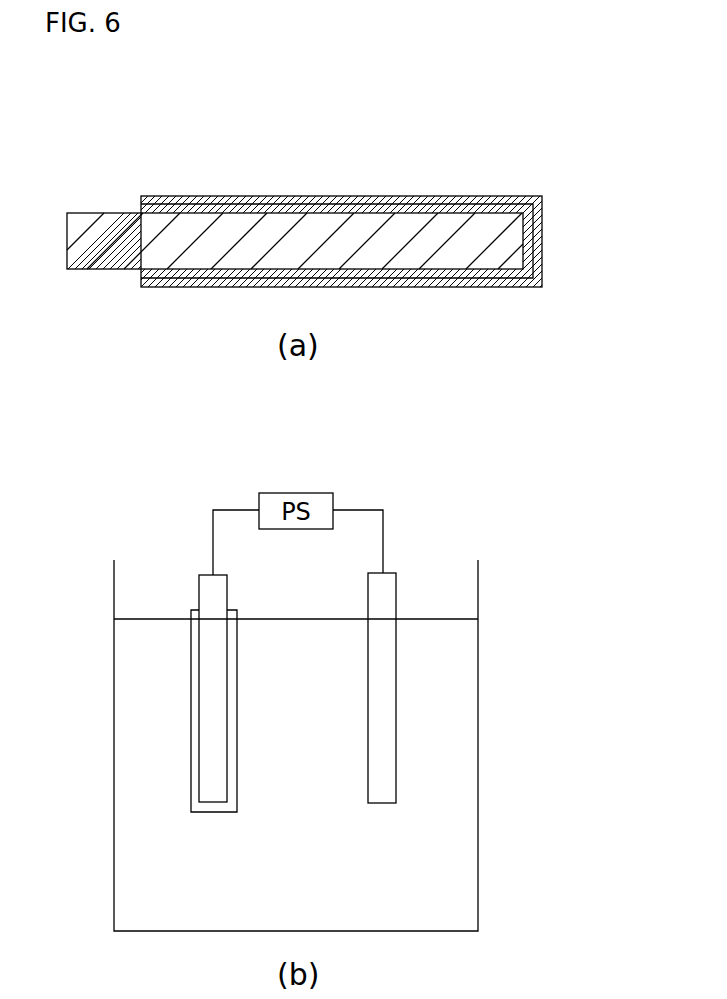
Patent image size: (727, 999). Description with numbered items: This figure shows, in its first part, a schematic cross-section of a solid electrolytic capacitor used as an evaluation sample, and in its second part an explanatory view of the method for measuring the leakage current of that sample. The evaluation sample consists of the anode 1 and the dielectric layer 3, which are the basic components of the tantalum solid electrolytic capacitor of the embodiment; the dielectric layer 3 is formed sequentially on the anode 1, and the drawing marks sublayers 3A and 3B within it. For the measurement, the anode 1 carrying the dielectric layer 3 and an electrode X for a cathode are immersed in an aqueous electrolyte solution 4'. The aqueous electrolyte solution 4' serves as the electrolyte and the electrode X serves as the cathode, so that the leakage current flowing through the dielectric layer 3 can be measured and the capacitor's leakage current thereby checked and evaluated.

The anode 1 is at (510, 237).
The dielectric layer 3 is at (337, 464).
The inner coating layer 3A is at (257, 210).
The outer coating layer 3B is at (358, 200).
The electrode for a cathode X is at (386, 588).
The aqueous electrolyte solution 4' is at (342, 745).